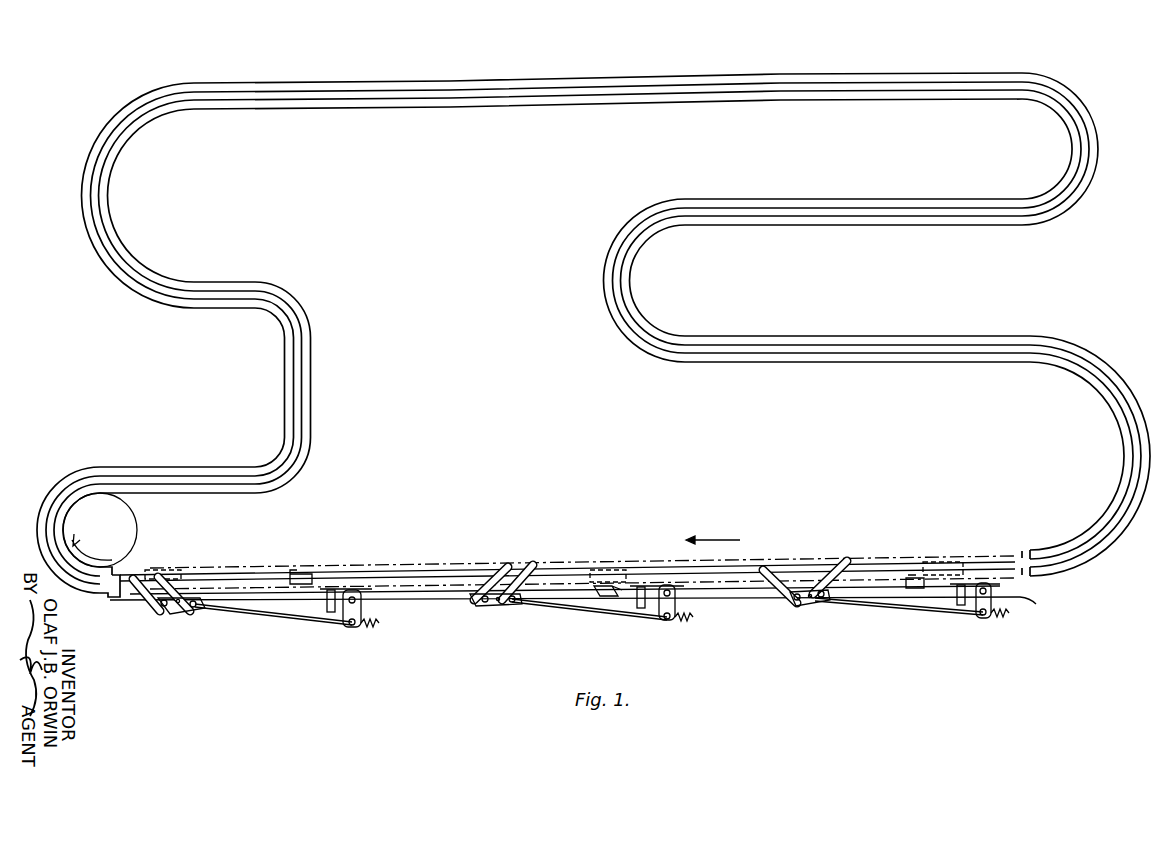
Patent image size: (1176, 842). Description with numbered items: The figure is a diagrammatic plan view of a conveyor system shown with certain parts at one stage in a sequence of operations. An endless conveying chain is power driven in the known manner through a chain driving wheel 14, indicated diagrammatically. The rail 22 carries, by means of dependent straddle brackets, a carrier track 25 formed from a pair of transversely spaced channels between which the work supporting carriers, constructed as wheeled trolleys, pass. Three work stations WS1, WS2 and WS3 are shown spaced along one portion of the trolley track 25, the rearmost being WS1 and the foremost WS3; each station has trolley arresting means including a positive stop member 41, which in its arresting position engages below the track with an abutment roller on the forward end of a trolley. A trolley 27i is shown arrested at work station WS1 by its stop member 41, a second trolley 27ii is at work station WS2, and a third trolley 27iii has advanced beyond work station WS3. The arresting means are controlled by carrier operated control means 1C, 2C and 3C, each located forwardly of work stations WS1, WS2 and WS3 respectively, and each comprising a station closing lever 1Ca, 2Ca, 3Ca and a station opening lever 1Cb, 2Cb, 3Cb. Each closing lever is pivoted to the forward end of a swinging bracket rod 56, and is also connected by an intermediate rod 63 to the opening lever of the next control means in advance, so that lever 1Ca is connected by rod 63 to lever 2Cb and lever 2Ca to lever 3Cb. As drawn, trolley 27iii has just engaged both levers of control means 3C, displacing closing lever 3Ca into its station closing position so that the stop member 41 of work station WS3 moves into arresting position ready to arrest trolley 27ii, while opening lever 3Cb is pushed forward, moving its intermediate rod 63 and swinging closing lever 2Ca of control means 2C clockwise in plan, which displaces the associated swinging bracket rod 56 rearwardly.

The rail 22 is at (395, 92).
The carrier track 25 is at (1082, 188).
The chain driving wheel 14 is at (124, 524).
The trolley 27iii is at (180, 574).
The trolley 27ii is at (607, 570).
The trolley 27i is at (942, 564).
The positive stop member 41 is at (280, 594).
The station closing lever 3Ca is at (140, 592).
The station opening lever 3Cb is at (150, 602).
The control means 3C is at (181, 619).
The station closing lever 2Ca is at (508, 567).
The station opening lever 2Cb is at (534, 566).
The control means 2C is at (496, 613).
The station closing lever 1Ca is at (763, 570).
The station opening lever 1Cb is at (848, 562).
The control means 1C is at (810, 611).
The swinging bracket rod 56 is at (237, 612).
The intermediate rod 63 is at (126, 606).
The work station WS3 is at (318, 617).
The work station WS2 is at (652, 612).
The work station WS1 is at (967, 610).